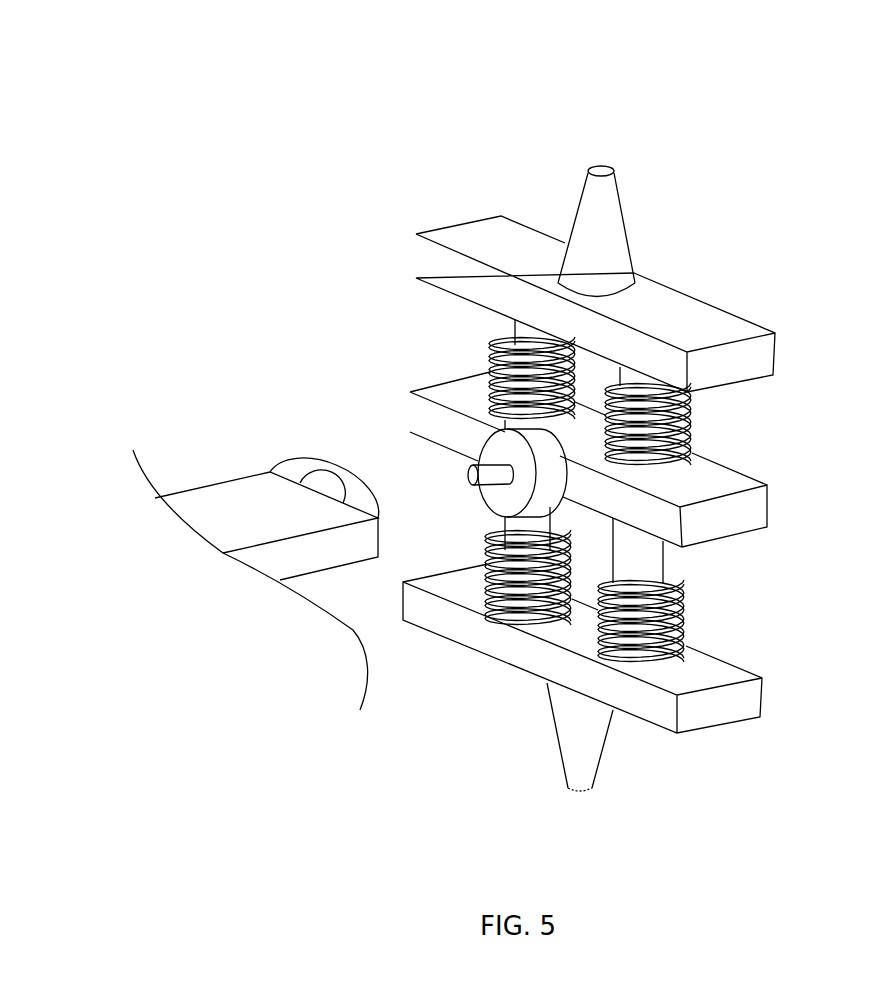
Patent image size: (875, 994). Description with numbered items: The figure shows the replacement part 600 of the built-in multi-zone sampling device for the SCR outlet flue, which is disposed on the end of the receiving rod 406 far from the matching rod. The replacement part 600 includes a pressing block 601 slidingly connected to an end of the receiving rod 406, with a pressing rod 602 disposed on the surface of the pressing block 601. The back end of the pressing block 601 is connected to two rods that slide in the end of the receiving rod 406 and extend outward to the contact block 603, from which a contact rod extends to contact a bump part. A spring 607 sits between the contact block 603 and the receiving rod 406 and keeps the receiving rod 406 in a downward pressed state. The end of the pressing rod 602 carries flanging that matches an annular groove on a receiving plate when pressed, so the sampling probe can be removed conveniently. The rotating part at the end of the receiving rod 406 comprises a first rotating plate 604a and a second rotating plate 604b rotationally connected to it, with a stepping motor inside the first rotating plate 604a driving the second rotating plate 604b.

The receiving rod 406 is at (248, 527).
The replacement part 600 is at (626, 444).
The pressing block 601 is at (483, 250).
The pressing rod 602 is at (635, 562).
The contact block 603 is at (567, 723).
The first rotating plate 604a is at (337, 470).
The second rotating plate 604b is at (548, 486).
The spring 607 is at (653, 623).